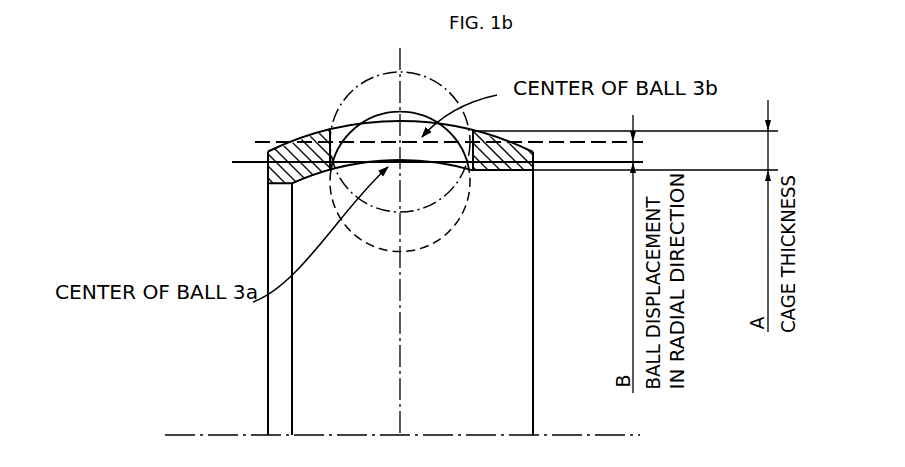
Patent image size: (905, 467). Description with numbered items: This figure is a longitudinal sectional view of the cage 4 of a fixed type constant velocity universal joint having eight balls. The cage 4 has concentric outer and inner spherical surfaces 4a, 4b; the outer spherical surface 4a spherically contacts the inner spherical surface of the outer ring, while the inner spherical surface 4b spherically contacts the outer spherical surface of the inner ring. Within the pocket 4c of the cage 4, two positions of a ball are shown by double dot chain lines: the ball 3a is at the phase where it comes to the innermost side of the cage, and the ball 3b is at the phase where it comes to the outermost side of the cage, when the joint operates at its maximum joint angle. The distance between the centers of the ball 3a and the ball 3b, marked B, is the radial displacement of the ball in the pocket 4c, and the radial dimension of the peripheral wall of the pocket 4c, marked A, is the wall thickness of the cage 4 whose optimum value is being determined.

The ball 3a is at (368, 98).
The ball 3b is at (449, 88).
The cage 4 is at (384, 265).
The outer spherical surface 4a is at (297, 142).
The inner spherical surface 4b is at (308, 178).
The pocket 4c is at (453, 159).